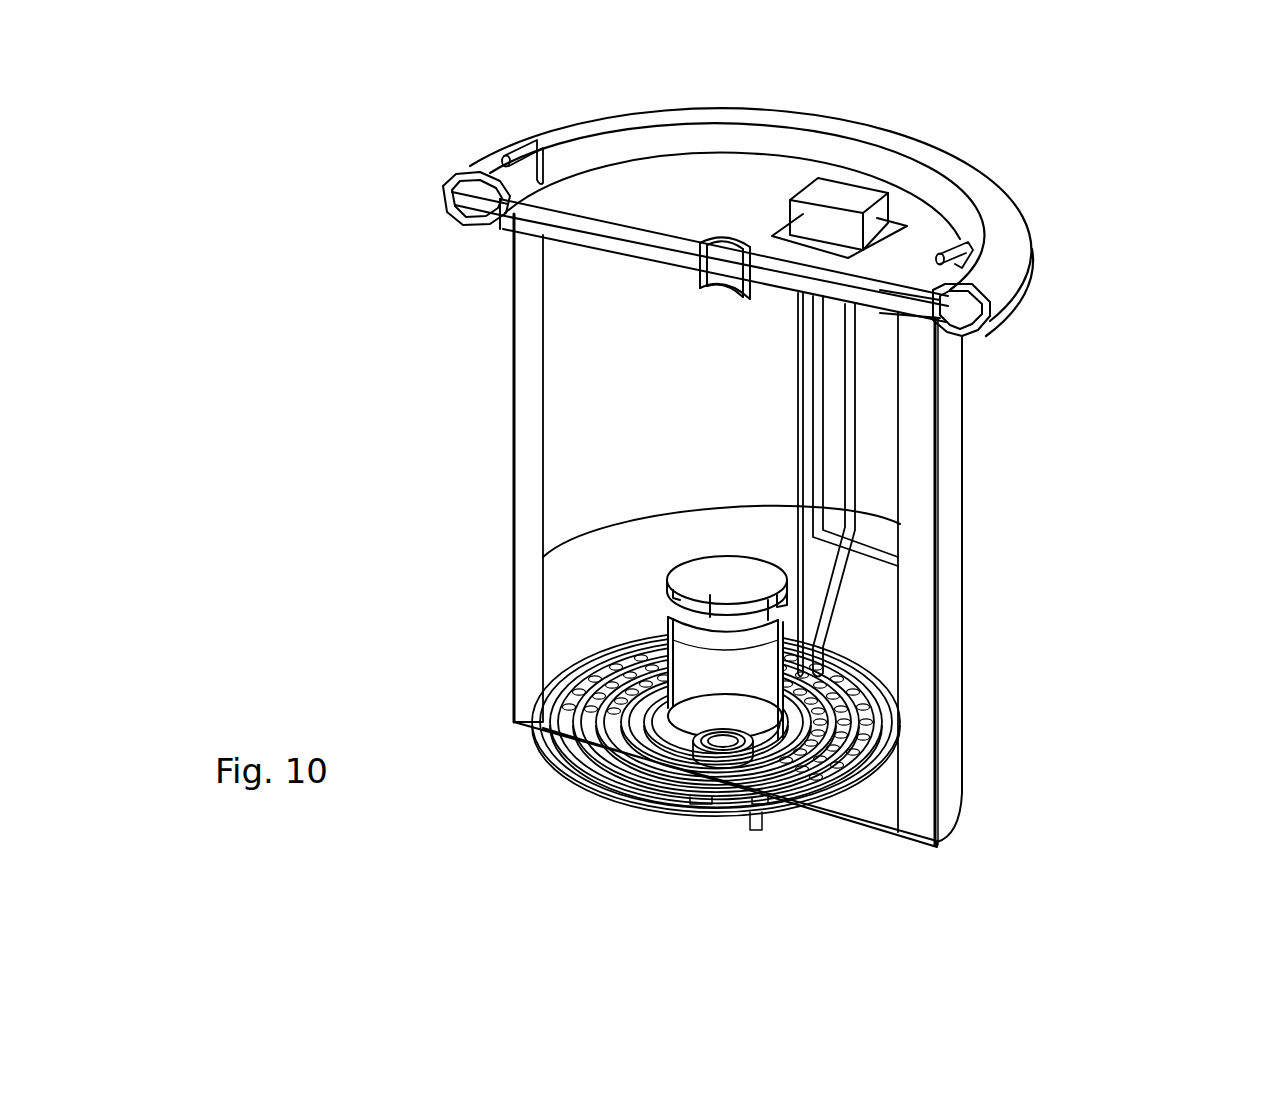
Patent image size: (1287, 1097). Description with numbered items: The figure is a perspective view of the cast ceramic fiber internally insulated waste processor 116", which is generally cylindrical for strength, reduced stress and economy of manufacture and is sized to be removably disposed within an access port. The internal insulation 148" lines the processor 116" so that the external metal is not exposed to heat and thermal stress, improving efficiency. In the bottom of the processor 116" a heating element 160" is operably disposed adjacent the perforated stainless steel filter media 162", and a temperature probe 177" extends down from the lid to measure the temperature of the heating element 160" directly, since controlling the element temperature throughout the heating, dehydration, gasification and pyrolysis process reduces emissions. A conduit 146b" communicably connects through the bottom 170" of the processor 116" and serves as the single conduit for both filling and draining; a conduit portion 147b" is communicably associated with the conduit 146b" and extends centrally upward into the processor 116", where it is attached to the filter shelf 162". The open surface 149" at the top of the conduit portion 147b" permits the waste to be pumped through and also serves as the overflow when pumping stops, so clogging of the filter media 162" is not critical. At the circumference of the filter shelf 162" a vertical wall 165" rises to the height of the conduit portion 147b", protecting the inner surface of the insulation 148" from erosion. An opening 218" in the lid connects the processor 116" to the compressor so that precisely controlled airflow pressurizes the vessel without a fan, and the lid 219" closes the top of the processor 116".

The top plate / lid 219 is at (663, 187).
The opening 218 is at (708, 240).
The vertical wall 165 is at (750, 520).
The waste processor 116 is at (963, 447).
The temperature probe 177 is at (795, 322).
The open surface 149 is at (665, 583).
The filter media 162 is at (705, 650).
The conduit portion 147b is at (623, 668).
The heating element 160 is at (900, 525).
The internal insulation 148 is at (913, 593).
The bottom 170 is at (900, 837).
The conduit 146b is at (720, 748).